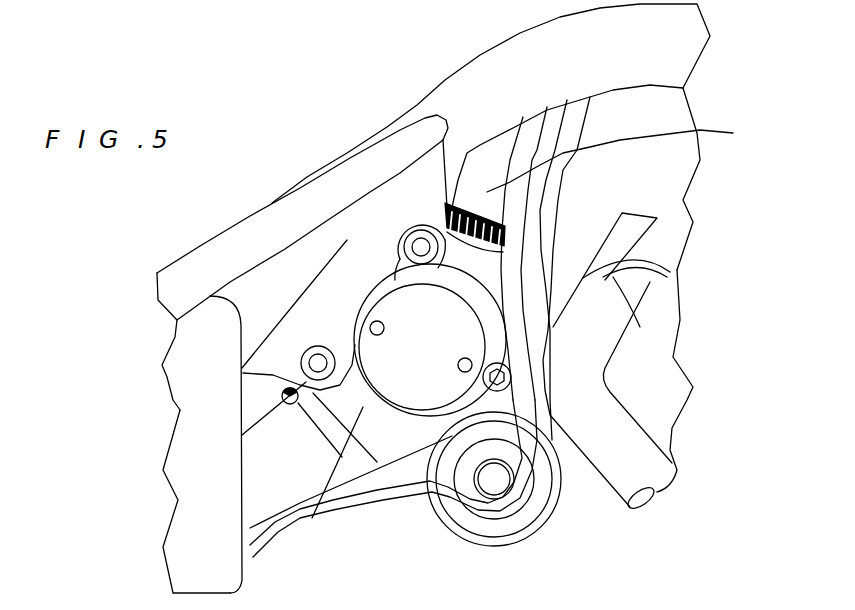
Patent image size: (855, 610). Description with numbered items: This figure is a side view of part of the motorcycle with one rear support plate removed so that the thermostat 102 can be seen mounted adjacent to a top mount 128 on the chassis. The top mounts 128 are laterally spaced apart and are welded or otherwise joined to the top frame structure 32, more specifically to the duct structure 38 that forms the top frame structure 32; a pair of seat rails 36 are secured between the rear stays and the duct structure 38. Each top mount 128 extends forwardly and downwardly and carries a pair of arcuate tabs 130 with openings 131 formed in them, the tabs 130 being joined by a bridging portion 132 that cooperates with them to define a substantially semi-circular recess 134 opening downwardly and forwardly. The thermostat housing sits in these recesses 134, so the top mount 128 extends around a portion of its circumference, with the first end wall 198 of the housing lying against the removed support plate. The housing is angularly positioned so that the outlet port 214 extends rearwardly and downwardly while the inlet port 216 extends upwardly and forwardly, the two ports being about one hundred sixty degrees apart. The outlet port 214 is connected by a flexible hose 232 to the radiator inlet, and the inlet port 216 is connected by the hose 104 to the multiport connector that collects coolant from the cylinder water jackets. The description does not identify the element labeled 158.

The top frame structure 32 is at (292, 131).
The seat rails 36 is at (242, 238).
The duct structure 38 is at (460, 82).
The thermostat 102 is at (505, 317).
The flexible hose 104 is at (617, 148).
The top mounts 128 is at (336, 322).
The arcuate tabs 130 is at (303, 402).
The openings 131 is at (421, 247).
The bridging portion 132 is at (348, 287).
The semi-circular recess 134 is at (352, 341).
The frame plate 158 is at (268, 283).
The first end wall 198 is at (417, 373).
The outlet port 214 is at (347, 400).
The inlet port 216 is at (486, 272).
The flexible hose 232 is at (260, 485).